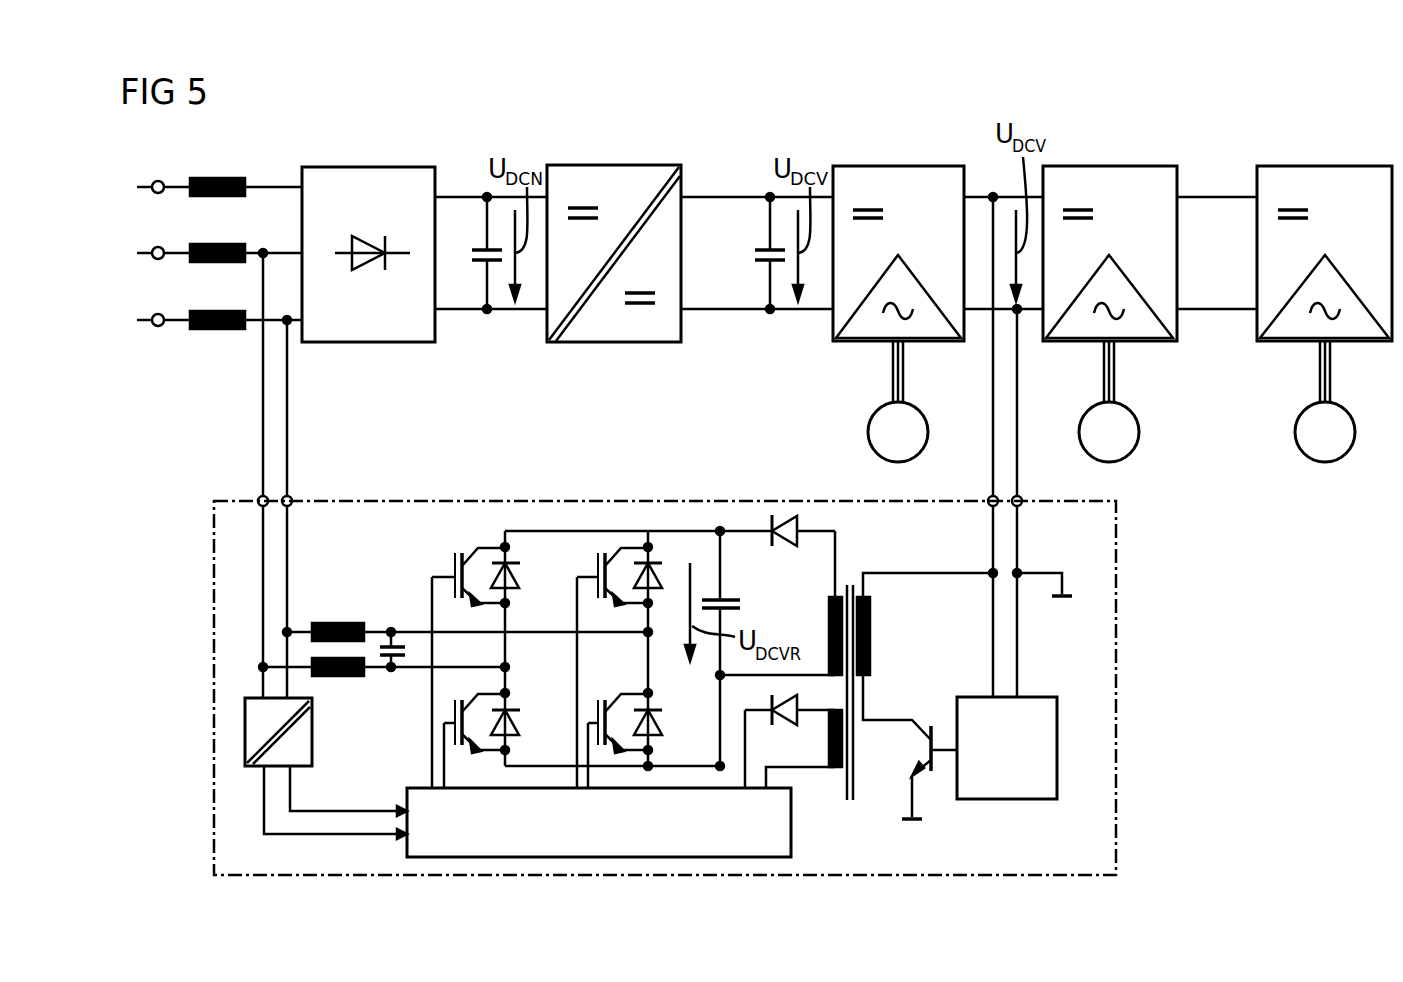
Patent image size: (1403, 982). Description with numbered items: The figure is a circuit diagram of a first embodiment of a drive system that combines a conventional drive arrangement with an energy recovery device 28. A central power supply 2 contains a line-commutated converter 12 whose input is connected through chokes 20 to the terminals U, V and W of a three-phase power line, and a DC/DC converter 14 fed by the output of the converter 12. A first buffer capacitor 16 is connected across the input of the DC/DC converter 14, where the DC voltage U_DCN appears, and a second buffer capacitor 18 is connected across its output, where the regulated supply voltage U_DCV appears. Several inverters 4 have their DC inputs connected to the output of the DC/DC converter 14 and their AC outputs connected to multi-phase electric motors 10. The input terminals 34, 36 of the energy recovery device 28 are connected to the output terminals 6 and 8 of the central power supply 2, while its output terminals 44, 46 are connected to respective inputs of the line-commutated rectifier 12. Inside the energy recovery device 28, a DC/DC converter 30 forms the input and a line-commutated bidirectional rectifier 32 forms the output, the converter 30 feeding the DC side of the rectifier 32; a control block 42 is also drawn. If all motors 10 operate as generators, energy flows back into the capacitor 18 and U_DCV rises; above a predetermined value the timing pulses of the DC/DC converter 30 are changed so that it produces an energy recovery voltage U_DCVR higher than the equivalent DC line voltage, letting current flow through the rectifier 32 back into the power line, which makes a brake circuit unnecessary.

The central power supply 2 is at (498, 118).
The inverter 4 is at (898, 166).
The output terminal 6 is at (770, 197).
The output terminal 8 is at (770, 309).
The multi-phase electric motor 10 is at (928, 432).
The line-commutated converter 12 is at (366, 166).
The DC/DC converter 14 is at (616, 165).
The first buffer capacitor 16 is at (483, 248).
The second buffer capacitor 18 is at (766, 248).
The choke 20 is at (200, 178).
The energy recovery device 28 is at (583, 501).
The DC/DC converter 30 is at (947, 653).
The line-commutated bidirectional rectifier 32 is at (559, 697).
The input terminal 34 is at (988, 496).
The input terminal 36 is at (1021, 496).
The control device 42 is at (791, 828).
The output terminal 44 is at (258, 496).
The output terminal 46 is at (292, 496).